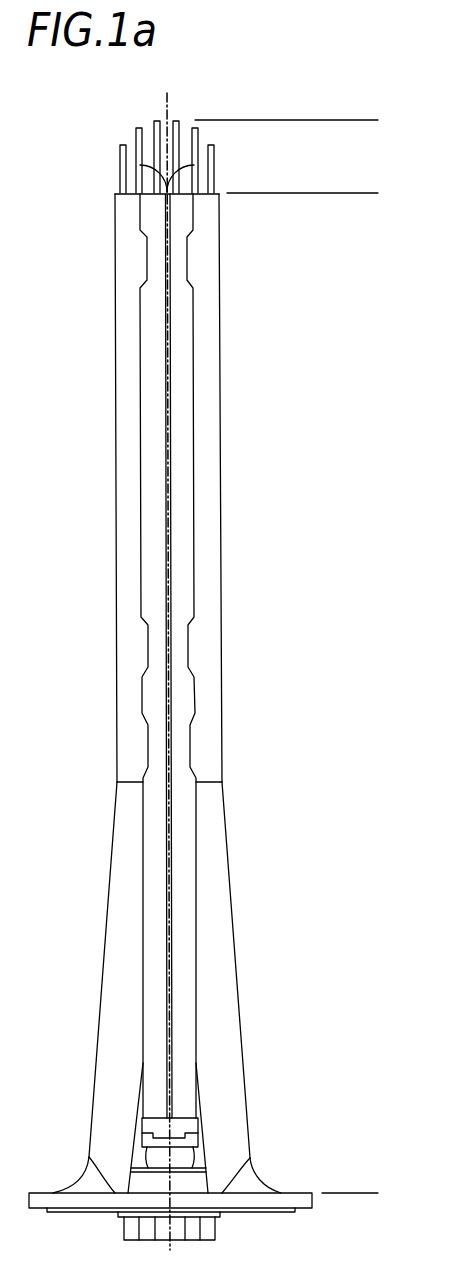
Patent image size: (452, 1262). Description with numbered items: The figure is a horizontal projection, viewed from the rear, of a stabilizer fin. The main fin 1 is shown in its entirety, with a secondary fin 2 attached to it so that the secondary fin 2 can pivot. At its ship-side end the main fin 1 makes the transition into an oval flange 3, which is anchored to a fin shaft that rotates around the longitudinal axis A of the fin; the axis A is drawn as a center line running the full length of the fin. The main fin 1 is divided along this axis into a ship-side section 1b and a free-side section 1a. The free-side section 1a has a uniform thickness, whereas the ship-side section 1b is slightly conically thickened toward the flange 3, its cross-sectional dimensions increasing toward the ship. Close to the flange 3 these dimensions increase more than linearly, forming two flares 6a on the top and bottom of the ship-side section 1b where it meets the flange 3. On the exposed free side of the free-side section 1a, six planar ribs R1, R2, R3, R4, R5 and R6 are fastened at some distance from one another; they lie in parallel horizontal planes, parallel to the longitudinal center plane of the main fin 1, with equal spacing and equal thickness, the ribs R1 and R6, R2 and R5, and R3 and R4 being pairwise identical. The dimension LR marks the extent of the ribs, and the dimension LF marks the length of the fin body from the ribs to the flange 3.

The main fin 1 is at (100, 782).
The free-side section 1a is at (128, 453).
The ship-side section 1b is at (115, 1013).
The secondary fin 2 is at (182, 557).
The oval flange 3 is at (48, 1198).
The flares 6a is at (90, 1177).
The longitudinal axis A is at (170, 1184).
The rib R1 is at (214, 175).
The rib R2 is at (198, 132).
The rib R3 is at (180, 126).
The rib R4 is at (154, 126).
The rib R5 is at (136, 132).
The rib R6 is at (119, 175).
The lead length dimension LR is at (360, 121).
The housing length dimension LF is at (360, 194).